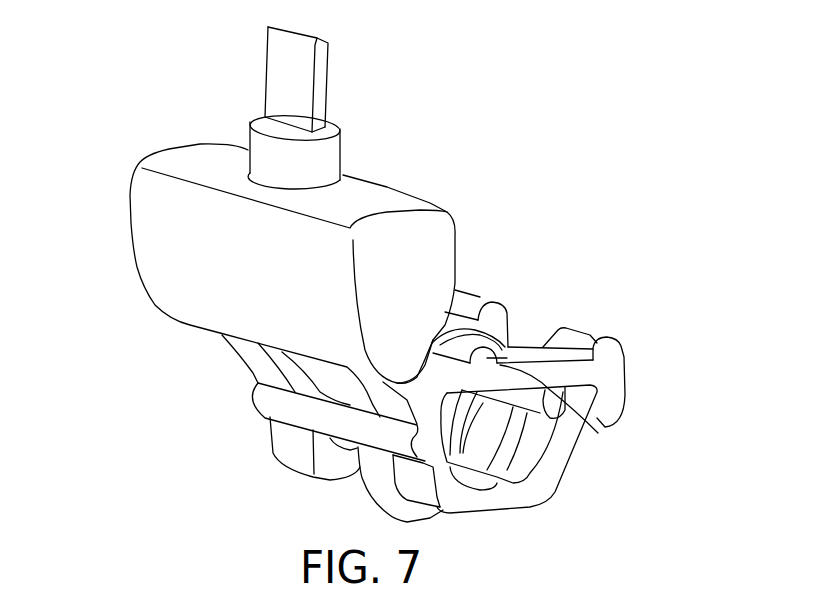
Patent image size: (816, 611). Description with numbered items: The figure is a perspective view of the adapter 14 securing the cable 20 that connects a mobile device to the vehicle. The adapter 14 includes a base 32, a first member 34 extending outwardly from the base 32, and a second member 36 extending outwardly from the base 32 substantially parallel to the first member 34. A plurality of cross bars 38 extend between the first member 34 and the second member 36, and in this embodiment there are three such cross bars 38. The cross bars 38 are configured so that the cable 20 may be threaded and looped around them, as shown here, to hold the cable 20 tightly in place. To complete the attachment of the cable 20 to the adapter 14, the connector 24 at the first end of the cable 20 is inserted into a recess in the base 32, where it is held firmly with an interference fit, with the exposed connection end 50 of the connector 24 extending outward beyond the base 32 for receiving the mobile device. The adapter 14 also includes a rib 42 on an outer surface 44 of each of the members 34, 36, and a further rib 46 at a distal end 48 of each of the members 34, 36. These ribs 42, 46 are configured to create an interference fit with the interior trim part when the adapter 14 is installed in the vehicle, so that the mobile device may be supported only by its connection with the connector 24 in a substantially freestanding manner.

The adapter 14 is at (160, 347).
The cable 20 is at (375, 487).
The connector 24 is at (325, 160).
The base 32 is at (182, 258).
The first member 34 is at (573, 447).
The second member 36 is at (497, 318).
The cross bars 38 is at (273, 407).
The rib 42 is at (600, 432).
The outer surface 44 is at (545, 345).
The rib 46 is at (477, 300).
The distal end 48 is at (512, 281).
The connection end 50 is at (304, 82).